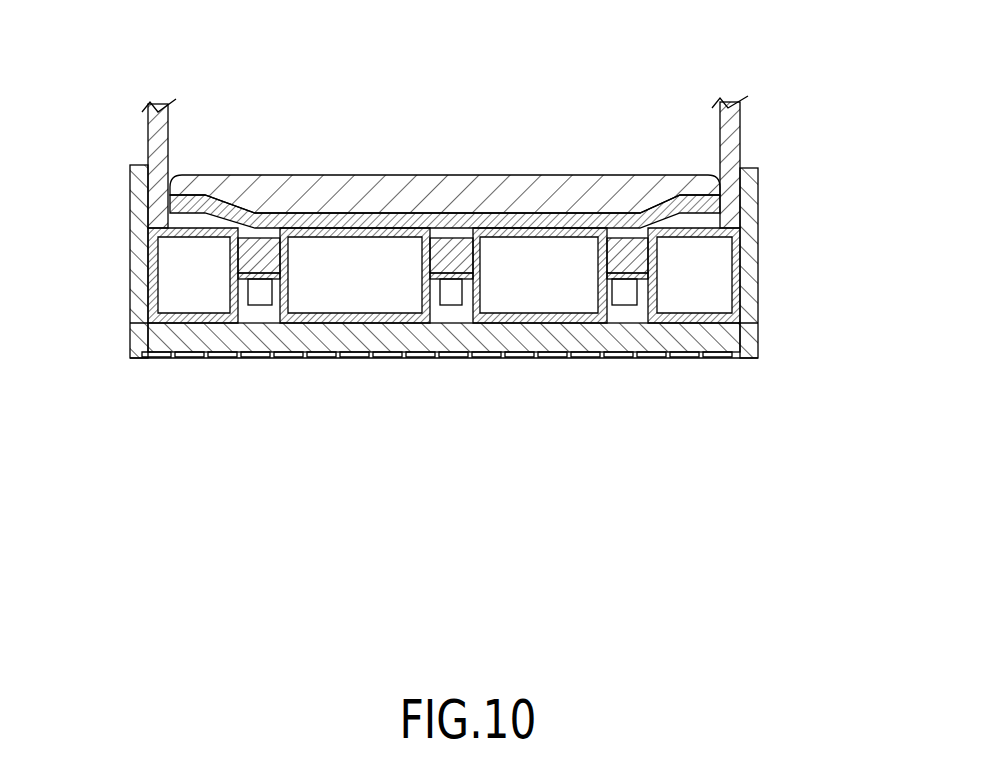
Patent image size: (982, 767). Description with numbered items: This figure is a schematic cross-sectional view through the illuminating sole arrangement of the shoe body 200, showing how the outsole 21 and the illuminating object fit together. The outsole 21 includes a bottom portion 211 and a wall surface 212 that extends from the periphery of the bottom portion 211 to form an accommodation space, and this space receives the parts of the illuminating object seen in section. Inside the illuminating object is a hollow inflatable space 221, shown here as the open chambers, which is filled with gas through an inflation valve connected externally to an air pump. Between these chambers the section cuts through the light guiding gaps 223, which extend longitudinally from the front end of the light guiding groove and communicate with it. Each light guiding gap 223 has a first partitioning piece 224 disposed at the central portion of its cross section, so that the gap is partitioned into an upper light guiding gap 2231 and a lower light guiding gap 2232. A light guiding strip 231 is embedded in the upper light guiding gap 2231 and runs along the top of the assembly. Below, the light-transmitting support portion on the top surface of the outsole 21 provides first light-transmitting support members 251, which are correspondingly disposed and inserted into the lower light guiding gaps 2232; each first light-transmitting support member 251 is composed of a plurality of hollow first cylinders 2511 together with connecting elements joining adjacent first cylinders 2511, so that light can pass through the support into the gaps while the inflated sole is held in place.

The shoe body 200 is at (148, 122).
The outsole 21 is at (381, 340).
The bottom portion 211 is at (404, 411).
The wall surface 212 is at (136, 286).
The inflatable space 221 is at (173, 268).
The light guiding gap 223 is at (546, 285).
The upper light guiding gap 2231 is at (232, 250).
The lower light guiding gap 2232 is at (276, 293).
The first partitioning piece 224 is at (283, 275).
The light guiding strip 231 is at (277, 205).
The first light-transmitting support member 251 is at (562, 513).
The first cylinder 2511 is at (258, 310).